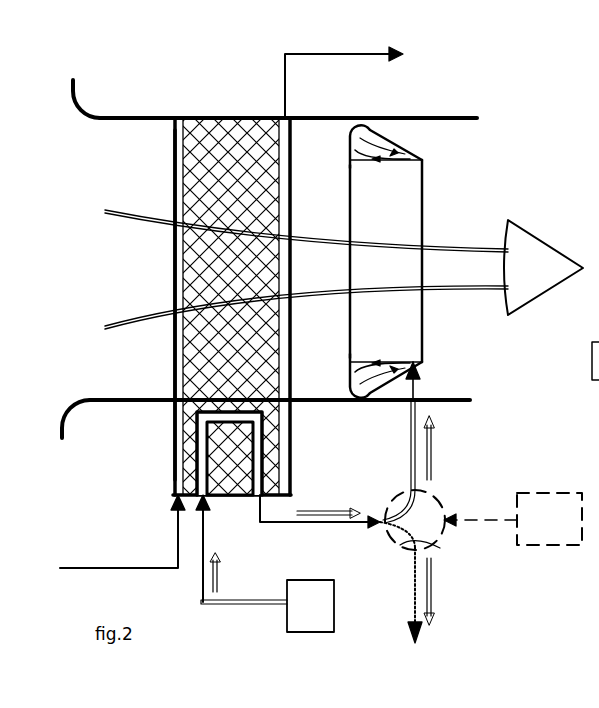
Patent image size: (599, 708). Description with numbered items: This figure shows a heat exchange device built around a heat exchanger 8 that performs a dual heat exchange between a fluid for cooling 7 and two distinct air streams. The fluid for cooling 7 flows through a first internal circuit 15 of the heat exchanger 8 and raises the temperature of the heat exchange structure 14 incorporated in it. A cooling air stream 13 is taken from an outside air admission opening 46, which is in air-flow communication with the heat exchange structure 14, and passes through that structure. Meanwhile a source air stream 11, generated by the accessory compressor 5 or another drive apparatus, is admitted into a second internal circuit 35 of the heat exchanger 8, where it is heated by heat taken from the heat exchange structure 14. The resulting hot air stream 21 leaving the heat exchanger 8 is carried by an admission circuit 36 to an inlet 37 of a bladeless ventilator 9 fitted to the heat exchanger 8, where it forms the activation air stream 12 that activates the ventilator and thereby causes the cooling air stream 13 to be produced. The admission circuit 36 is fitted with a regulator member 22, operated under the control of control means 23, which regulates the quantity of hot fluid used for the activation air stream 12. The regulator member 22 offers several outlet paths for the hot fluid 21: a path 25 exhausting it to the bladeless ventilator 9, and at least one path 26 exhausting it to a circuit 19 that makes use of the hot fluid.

The heat exchanger 8 is at (190, 103).
The heat exchange structure 14 is at (222, 147).
The first internal circuit 15 is at (175, 168).
The second internal circuit 35 is at (197, 445).
The outside air admission opening 46 is at (113, 281).
The cooling air stream 13 is at (546, 277).
The bladeless ventilator 9 is at (422, 210).
The activation air stream 12 is at (362, 173).
The inlet of the bladeless ventilator 37 is at (424, 366).
The fluid for cooling 7 is at (231, 300).
The source air stream 11 is at (241, 549).
The accessory compressor 5 is at (316, 612).
The hot air stream 21 is at (360, 520).
The admission circuit 36 is at (411, 444).
The path for exhausting hot fluid to the bladeless ventilator 25 is at (425, 500).
The path for exhausting hot fluid to a utilization circuit 26 is at (428, 541).
The regulator member 22 is at (383, 547).
The circuit for making use of the hot fluid 19 is at (415, 598).
The control means 23 is at (561, 529).